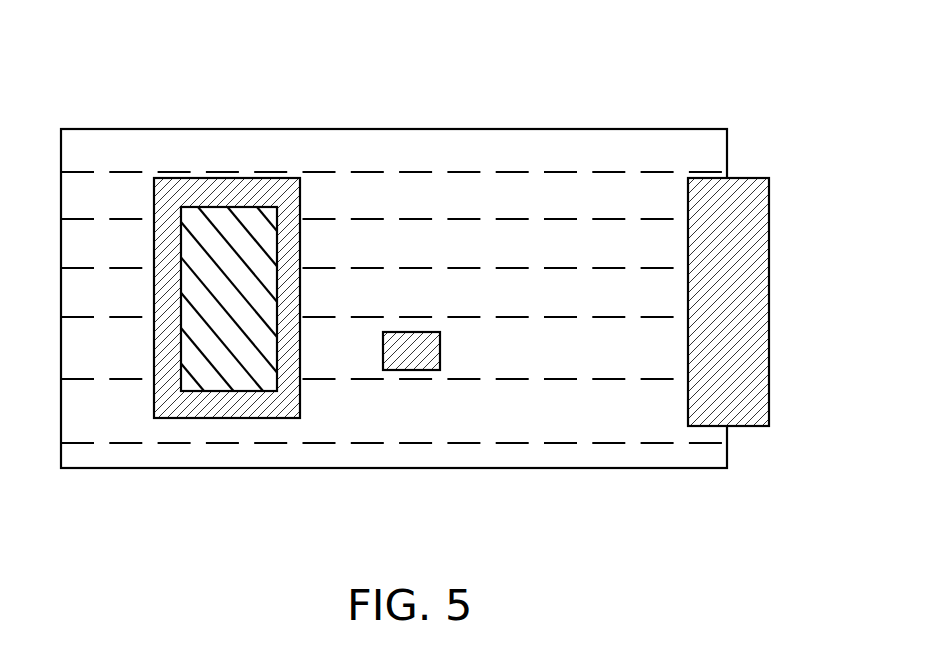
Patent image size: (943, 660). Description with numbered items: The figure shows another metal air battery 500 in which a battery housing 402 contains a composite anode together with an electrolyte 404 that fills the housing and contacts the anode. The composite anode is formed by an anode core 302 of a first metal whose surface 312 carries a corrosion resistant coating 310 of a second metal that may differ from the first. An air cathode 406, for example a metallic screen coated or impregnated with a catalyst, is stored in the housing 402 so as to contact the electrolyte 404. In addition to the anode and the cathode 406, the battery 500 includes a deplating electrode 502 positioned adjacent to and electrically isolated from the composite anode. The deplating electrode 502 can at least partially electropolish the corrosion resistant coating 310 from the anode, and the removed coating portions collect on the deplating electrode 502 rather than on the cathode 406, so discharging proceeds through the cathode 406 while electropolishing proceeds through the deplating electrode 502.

The metal air battery 500 is at (667, 66).
The battery housing 402 is at (518, 128).
The electrolyte 404 is at (500, 400).
The corrosion resistant coating 310 is at (255, 178).
The anode core 302 is at (255, 318).
The surface 312 is at (184, 308).
The air cathode 406 is at (769, 305).
The deplating electrode 502 is at (402, 370).